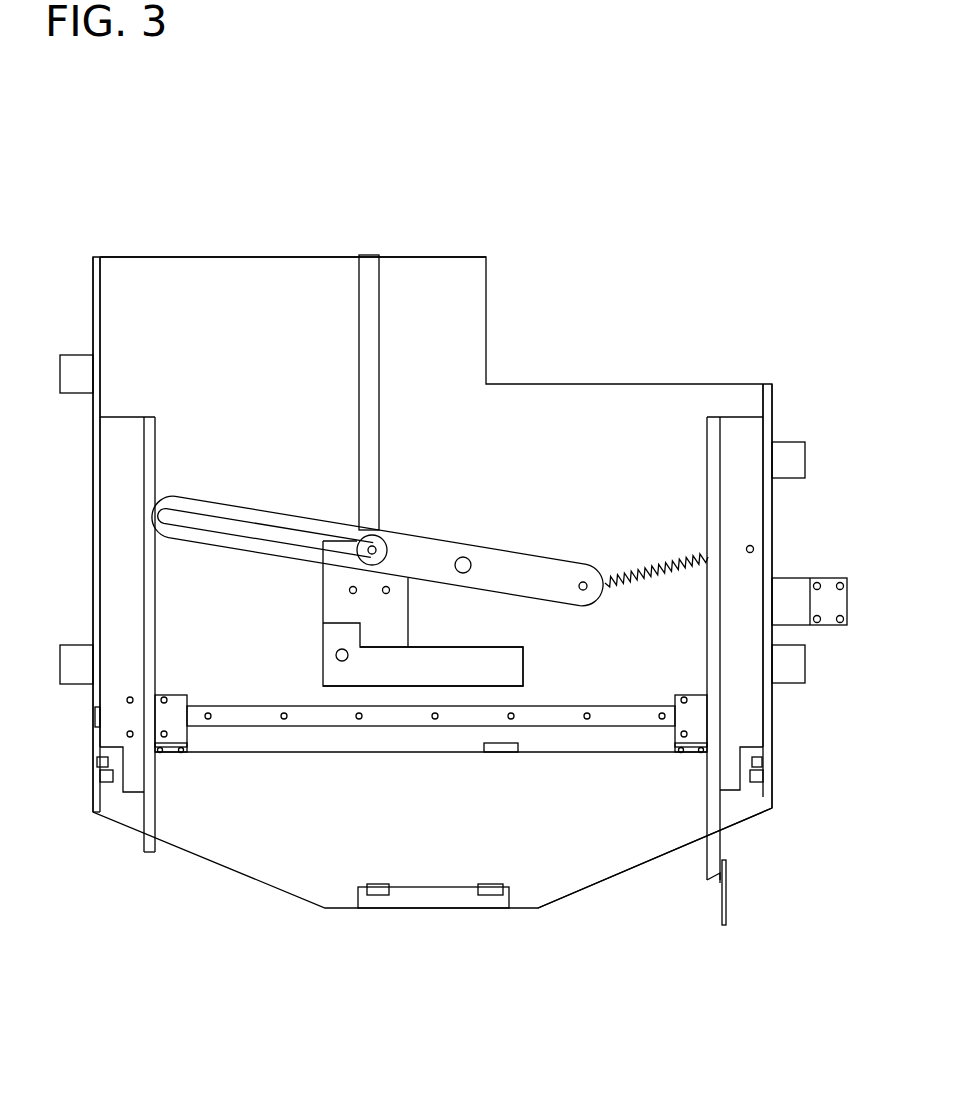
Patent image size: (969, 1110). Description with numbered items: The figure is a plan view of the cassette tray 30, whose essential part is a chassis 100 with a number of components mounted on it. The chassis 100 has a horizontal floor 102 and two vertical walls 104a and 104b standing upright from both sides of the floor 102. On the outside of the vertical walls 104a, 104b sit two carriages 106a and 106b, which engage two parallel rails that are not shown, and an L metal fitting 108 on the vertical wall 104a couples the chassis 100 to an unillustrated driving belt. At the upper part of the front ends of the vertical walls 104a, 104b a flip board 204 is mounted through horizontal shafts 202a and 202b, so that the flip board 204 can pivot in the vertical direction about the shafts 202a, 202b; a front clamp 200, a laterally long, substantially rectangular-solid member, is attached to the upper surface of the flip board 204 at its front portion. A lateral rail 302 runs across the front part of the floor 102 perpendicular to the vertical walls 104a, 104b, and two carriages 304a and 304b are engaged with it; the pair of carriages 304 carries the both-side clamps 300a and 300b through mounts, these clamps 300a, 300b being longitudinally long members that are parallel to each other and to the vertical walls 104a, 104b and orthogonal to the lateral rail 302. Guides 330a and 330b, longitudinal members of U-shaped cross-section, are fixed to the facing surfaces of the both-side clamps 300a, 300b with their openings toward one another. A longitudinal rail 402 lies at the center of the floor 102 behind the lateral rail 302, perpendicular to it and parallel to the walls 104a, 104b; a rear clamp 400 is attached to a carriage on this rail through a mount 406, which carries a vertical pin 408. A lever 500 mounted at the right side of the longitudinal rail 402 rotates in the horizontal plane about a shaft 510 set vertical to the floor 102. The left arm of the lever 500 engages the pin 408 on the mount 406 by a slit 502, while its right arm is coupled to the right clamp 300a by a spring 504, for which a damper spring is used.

The cassette tray 30 is at (425, 68).
The chassis 100 is at (338, 248).
The horizontal floor 102 is at (232, 285).
The vertical wall 104a is at (775, 416).
The vertical wall 104b is at (95, 290).
The carriage 106a is at (806, 458).
The carriage 106b is at (77, 360).
The L metal fitting 108 is at (845, 598).
The front clamp 200 is at (392, 898).
The horizontal shaft 202a is at (762, 783).
The horizontal shaft 202b is at (103, 778).
The flip board 204 is at (530, 882).
The both-side clamp 300a is at (735, 432).
The both-side clamp 300b is at (118, 453).
The lateral rail 302 is at (268, 723).
The slide rail 304 is at (431, 716).
The carriage 304a is at (698, 718).
The carriage 304b is at (162, 720).
The guide 330a is at (715, 867).
The guide 330b is at (150, 840).
The rear clamp 400 is at (447, 665).
The longitudinal rail 402 is at (380, 328).
The mount 406 is at (338, 602).
The vertical pin 408 is at (373, 547).
The lever 500 is at (562, 572).
The slit 502 is at (190, 512).
The spring 504 is at (707, 560).
The shaft 510 is at (470, 562).